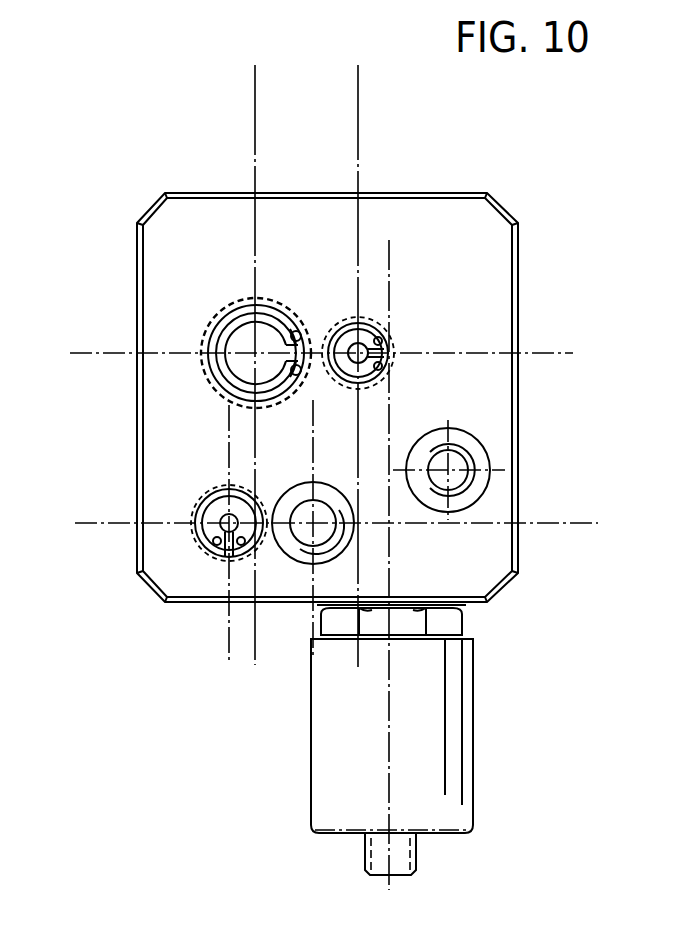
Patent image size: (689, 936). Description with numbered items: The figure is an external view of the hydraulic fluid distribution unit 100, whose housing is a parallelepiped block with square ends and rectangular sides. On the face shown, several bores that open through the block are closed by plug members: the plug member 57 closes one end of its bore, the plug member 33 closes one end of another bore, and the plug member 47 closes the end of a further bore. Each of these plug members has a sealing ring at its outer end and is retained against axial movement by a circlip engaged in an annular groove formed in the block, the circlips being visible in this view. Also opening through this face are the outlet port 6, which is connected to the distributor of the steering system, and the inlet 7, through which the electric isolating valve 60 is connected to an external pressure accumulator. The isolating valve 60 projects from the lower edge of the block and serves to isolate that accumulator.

The hydraulic fluid distribution unit 100 is at (137, 293).
The plug member 57 is at (238, 360).
The plug member 33 is at (365, 325).
The plug member 47 is at (203, 535).
The outlet port 6 is at (304, 541).
The inlet 7 is at (479, 456).
The electric isolating valve 60 is at (477, 731).